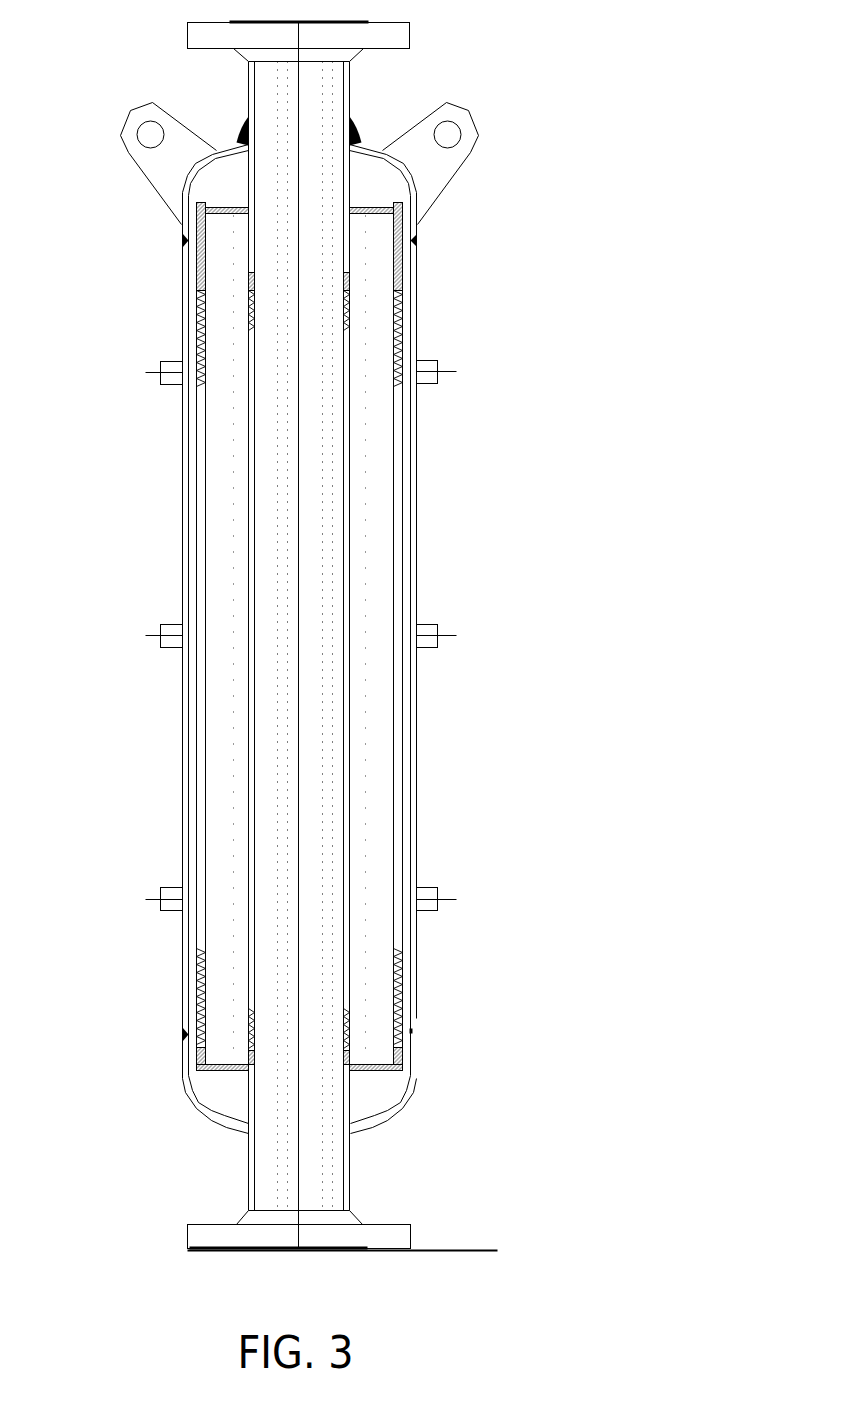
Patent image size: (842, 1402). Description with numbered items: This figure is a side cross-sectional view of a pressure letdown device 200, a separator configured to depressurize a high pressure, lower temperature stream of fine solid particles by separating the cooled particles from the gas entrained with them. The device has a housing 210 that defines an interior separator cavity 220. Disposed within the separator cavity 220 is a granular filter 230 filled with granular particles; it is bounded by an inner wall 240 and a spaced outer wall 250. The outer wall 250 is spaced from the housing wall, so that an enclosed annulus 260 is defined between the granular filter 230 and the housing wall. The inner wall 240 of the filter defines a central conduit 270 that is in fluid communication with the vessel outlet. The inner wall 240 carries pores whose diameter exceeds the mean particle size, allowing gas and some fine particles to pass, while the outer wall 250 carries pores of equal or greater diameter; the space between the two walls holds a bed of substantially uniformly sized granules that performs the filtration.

The pressure letdown device 200 is at (497, 700).
The housing 210 is at (181, 307).
The separator cavity 220 is at (403, 270).
The granular filter 230 is at (385, 452).
The inner wall 240 is at (248, 475).
The outer wall 250 is at (398, 572).
The enclosed annulus 260 is at (215, 1089).
The conduit 270 is at (268, 845).